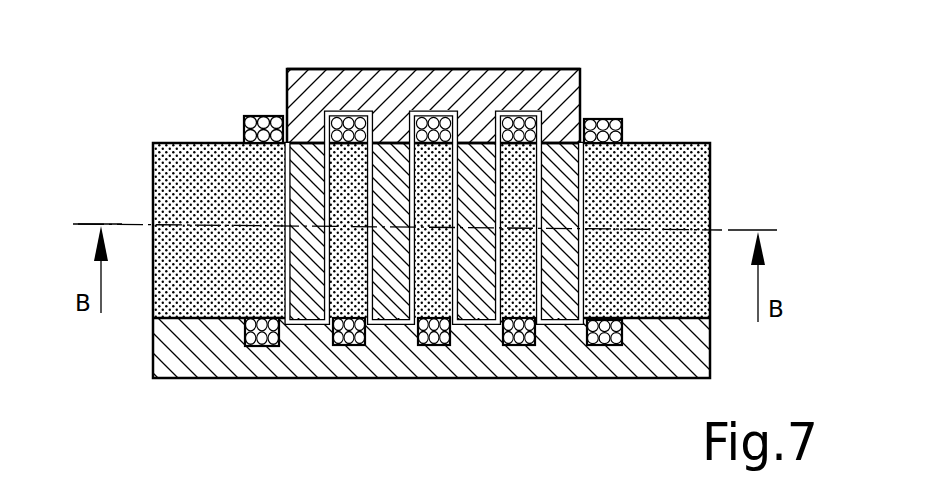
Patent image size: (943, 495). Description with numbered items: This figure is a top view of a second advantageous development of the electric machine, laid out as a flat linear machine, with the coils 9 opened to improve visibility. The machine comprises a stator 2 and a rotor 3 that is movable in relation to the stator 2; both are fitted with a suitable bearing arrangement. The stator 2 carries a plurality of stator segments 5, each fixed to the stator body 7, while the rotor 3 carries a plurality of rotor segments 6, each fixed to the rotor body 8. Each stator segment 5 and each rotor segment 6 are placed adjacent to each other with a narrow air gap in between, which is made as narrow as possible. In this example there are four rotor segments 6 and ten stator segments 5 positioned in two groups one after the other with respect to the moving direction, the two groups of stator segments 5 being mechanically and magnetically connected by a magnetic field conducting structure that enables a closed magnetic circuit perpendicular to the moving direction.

The stator 2 is at (143, 348).
The rotor 3 is at (278, 96).
The stator segments 5 is at (525, 181).
The rotor segments 6 is at (582, 180).
The stator body 7 is at (378, 365).
The rotor body 8 is at (316, 73).
The coils 9 is at (252, 348).